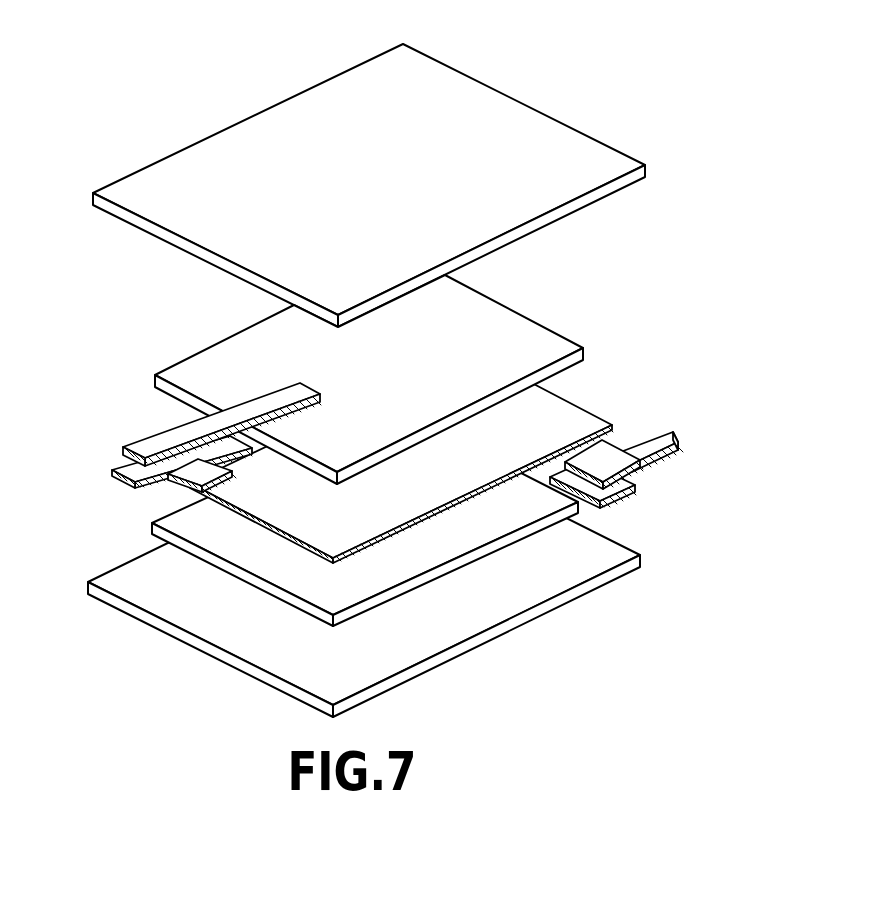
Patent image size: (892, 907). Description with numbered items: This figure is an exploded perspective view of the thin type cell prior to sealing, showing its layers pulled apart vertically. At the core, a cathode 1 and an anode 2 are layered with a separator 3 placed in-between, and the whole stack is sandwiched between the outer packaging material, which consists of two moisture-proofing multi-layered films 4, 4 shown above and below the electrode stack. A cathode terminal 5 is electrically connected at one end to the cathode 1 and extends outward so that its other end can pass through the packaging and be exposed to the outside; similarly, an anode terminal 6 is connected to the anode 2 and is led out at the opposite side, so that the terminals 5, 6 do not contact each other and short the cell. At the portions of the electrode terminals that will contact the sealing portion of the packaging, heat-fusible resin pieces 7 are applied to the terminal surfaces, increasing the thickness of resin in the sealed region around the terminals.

The cathode 1 is at (537, 510).
The anode 2 is at (515, 328).
The separator 3 is at (563, 413).
The moisture-proofing multi-layered film 4 is at (518, 128).
The cathode terminal 5 is at (655, 440).
The anode terminal 6 is at (132, 472).
The heat-fusible resin piece 7 is at (178, 435).